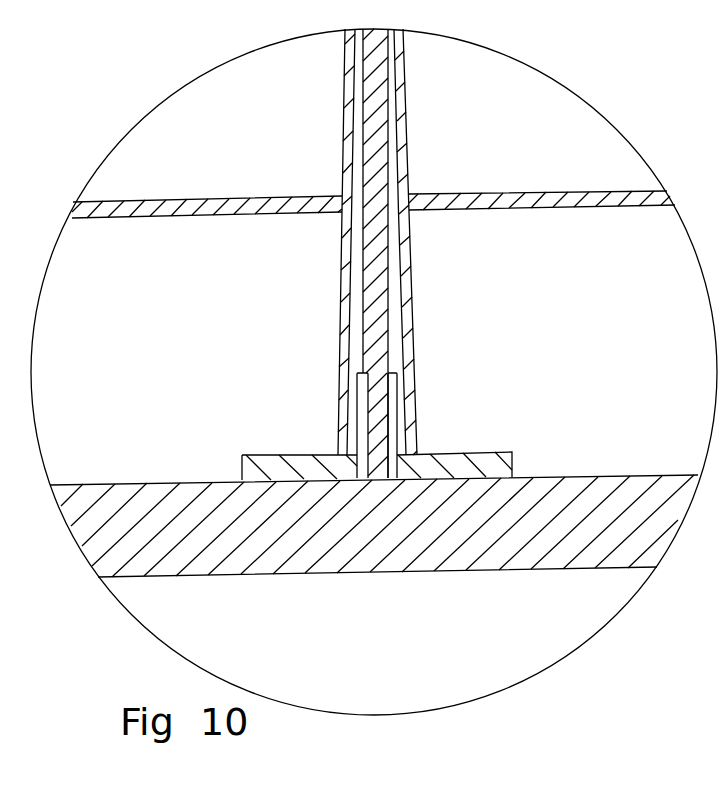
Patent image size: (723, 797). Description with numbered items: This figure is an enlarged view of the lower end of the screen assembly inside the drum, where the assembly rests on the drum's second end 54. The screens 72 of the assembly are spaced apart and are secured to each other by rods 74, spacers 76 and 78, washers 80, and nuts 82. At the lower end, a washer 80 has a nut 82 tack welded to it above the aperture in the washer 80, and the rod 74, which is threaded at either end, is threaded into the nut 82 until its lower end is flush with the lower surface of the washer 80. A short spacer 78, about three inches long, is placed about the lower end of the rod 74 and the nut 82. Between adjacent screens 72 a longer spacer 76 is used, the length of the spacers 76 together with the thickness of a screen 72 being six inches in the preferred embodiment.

The second end 54 is at (507, 568).
The screen 72 is at (578, 206).
The rod 74 is at (380, 253).
The longer spacer 76 is at (400, 123).
The short spacer 78 is at (413, 307).
The washer 80 is at (478, 452).
The nut 82 is at (393, 393).